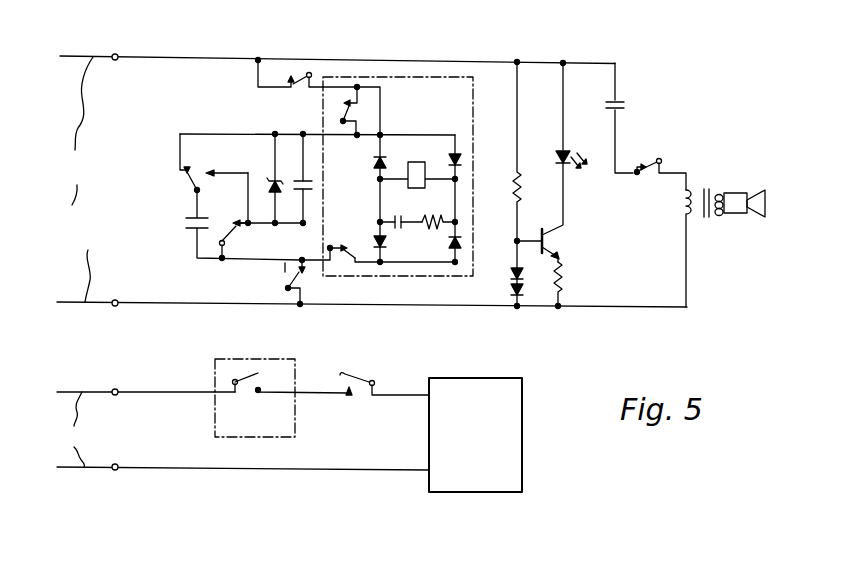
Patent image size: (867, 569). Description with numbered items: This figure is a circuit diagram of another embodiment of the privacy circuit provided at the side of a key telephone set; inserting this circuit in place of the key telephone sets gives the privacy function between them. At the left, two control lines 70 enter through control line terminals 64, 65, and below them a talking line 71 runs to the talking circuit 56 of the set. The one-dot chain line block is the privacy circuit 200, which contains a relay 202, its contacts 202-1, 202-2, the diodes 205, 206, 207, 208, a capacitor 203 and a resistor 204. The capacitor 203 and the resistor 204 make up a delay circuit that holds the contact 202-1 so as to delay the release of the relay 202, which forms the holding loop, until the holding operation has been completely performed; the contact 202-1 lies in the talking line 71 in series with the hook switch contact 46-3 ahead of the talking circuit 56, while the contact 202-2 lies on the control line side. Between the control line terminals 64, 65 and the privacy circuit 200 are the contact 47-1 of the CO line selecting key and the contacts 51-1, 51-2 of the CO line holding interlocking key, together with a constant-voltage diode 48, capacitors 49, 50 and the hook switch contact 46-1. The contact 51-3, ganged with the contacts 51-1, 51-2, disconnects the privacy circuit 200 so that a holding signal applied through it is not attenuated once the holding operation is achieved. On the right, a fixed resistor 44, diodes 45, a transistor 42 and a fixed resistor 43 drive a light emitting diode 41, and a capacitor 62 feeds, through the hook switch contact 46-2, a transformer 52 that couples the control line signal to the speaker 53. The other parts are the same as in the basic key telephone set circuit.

The control line terminal 64 is at (115, 57).
The control line terminal 65 is at (115, 307).
The control lines 70 is at (80, 179).
The contact of CO line selecting key 47-1 is at (292, 92).
The privacy circuit 200 is at (440, 77).
The contact of relay 202 202-2 is at (365, 110).
The contact of CO line holding interlocking key 51-2 is at (202, 165).
The contact of CO line holding interlocking key 51-1 is at (223, 221).
The constant-voltage diode 48 is at (281, 194).
The capacitor 49 is at (290, 173).
The capacitor 50 is at (186, 237).
The contact of hook switch 46-1 is at (281, 278).
The contact of CO line holding key 51-3 is at (347, 263).
The diode 205 is at (374, 165).
The diode 207 is at (444, 156).
The relay 202 is at (416, 189).
The capacitor 203 is at (398, 230).
The resistor 204 is at (432, 230).
The diode 206 is at (374, 238).
The diode 208 is at (462, 245).
The fixed resistor 44 is at (505, 182).
The diode 45 is at (504, 289).
The light emitting diode 41 is at (554, 156).
The transistor 42 is at (568, 243).
The fixed resistor 43 is at (570, 283).
The capacitor 62 is at (627, 103).
The contact of hook switch 46-2 is at (650, 158).
The transformer 52 is at (705, 220).
The speaker 53 is at (757, 222).
The talking line 71 is at (242, 429).
The contact of relay 202 202-1 is at (246, 400).
The contact of hook switch 46-3 is at (365, 366).
The talking circuit 56 is at (524, 422).